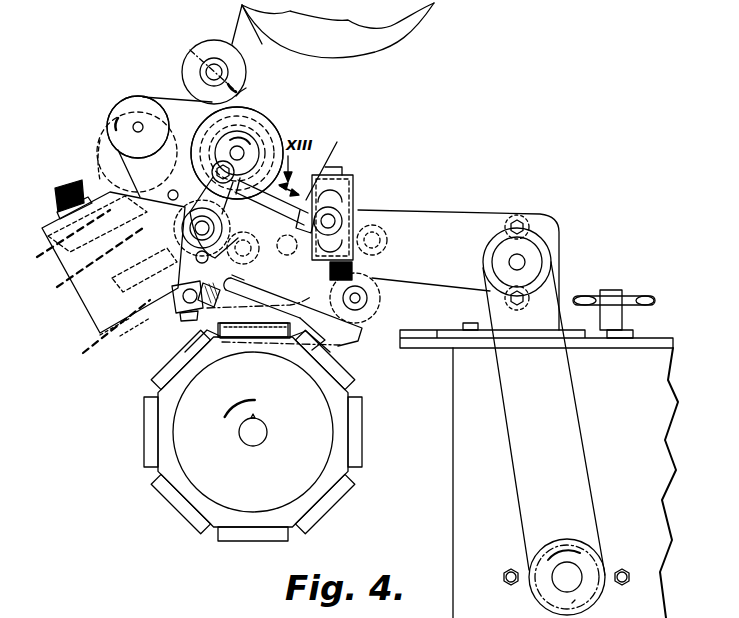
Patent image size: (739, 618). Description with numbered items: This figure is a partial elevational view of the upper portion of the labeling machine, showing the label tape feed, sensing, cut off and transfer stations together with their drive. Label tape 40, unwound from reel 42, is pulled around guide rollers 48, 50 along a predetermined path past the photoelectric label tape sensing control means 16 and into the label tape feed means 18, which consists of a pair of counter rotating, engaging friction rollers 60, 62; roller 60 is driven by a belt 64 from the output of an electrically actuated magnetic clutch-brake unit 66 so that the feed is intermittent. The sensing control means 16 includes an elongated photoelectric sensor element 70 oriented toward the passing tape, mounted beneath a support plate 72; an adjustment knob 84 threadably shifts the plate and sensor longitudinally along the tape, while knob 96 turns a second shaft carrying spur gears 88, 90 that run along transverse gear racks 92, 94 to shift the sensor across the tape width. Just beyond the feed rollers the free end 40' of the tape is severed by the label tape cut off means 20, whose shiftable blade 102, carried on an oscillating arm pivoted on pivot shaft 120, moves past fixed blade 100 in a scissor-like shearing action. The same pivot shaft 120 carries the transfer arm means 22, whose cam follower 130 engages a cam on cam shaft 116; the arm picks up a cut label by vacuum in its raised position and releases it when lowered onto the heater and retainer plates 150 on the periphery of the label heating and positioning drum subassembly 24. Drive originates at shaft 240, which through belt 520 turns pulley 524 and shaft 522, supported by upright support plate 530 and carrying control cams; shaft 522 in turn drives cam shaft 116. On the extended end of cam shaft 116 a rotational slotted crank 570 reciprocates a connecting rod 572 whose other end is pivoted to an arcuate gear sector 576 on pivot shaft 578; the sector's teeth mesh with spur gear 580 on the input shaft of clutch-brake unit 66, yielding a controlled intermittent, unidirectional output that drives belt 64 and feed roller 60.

The photoelectric label tape sensing control means 16 is at (42, 224).
The label tape feed means 18 is at (177, 300).
The label tape cut off means 20 is at (293, 310).
The transfer arm means 22 is at (352, 342).
The label heating and positioning drum subassembly 24 is at (180, 480).
The label tape 40 is at (187, 101).
The free end of tape 40' is at (250, 279).
The reel 42 is at (362, 48).
The guide roller 48 is at (236, 86).
The guide roller 50 is at (125, 107).
The friction roller 60 is at (240, 238).
The friction roller 62 is at (195, 313).
The belt 64 is at (198, 165).
The magnetic clutch-brake unit 66 is at (270, 130).
The photoelectric sensor element 70 is at (99, 290).
The support plate 72 is at (107, 251).
The adjustment knob 84 is at (62, 186).
The spur gear 88 is at (122, 338).
The spur gear 90 is at (129, 152).
The gear rack 92 is at (100, 336).
The gear rack 94 is at (50, 238).
The knob 96 is at (86, 182).
The fixed blade 100 is at (215, 306).
The shiftable blade 102 is at (246, 257).
The cam shaft 116 is at (362, 212).
The pivot shaft 120 is at (360, 298).
The cam follower 130 is at (388, 240).
The heater and retainer plates 150 is at (226, 332).
The shaft 240 is at (570, 576).
The belt 520 is at (574, 402).
The shaft 522 is at (522, 262).
The pulley 524 is at (545, 270).
The upright support plate 530 is at (548, 232).
The rotational slotted crank 570 is at (356, 175).
The connecting rod 572 is at (333, 166).
The arcuate gear sector 576 is at (186, 197).
The pivot shaft 578 is at (195, 228).
The spur gear 580 is at (244, 136).